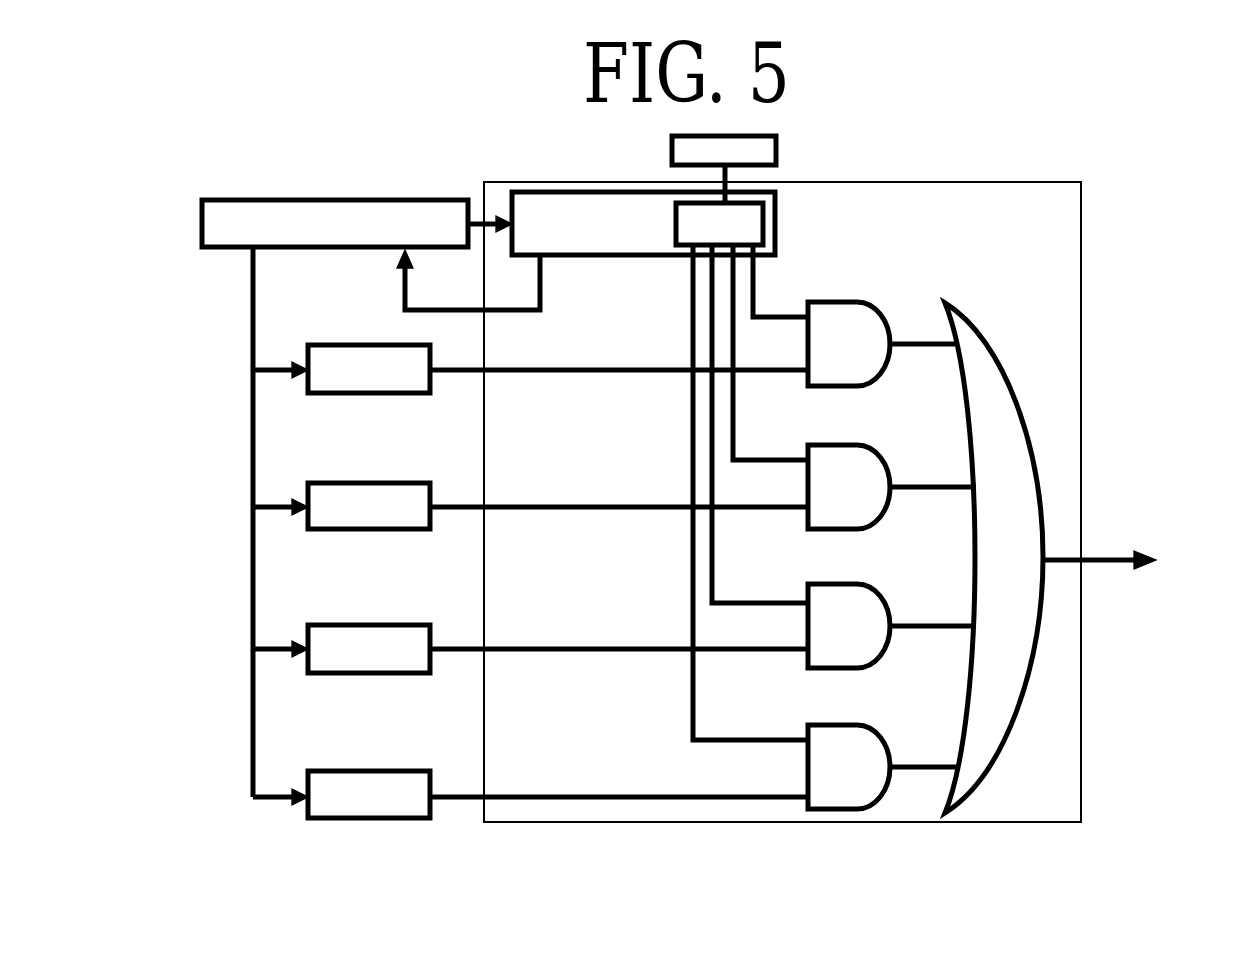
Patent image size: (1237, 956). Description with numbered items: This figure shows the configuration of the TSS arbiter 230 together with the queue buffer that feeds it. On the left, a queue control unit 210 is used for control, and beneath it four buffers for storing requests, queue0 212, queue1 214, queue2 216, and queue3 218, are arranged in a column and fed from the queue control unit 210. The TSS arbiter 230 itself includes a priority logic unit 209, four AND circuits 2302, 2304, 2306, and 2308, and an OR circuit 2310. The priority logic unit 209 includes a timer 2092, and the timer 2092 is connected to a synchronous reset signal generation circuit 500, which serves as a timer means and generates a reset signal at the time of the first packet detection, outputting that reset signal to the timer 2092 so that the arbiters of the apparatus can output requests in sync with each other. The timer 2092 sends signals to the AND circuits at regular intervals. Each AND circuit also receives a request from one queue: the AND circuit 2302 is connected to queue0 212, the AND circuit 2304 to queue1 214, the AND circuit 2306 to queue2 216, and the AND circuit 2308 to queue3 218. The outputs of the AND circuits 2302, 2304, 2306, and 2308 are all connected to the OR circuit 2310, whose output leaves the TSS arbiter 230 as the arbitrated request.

The queue control unit 210 is at (350, 205).
The queue0 212 is at (350, 348).
The queue1 214 is at (350, 488).
The queue2 216 is at (350, 630).
The queue3 218 is at (350, 775).
The priority logic unit 209 is at (551, 209).
The timer 2092 is at (692, 221).
The synchronous reset signal generation circuit 500 is at (672, 150).
The TSS arbiter 230 is at (1064, 228).
The AND circuit 2302 is at (843, 332).
The AND circuit 2304 is at (850, 493).
The AND circuit 2306 is at (833, 650).
The AND circuit 2308 is at (840, 792).
The OR circuit 2310 is at (983, 370).